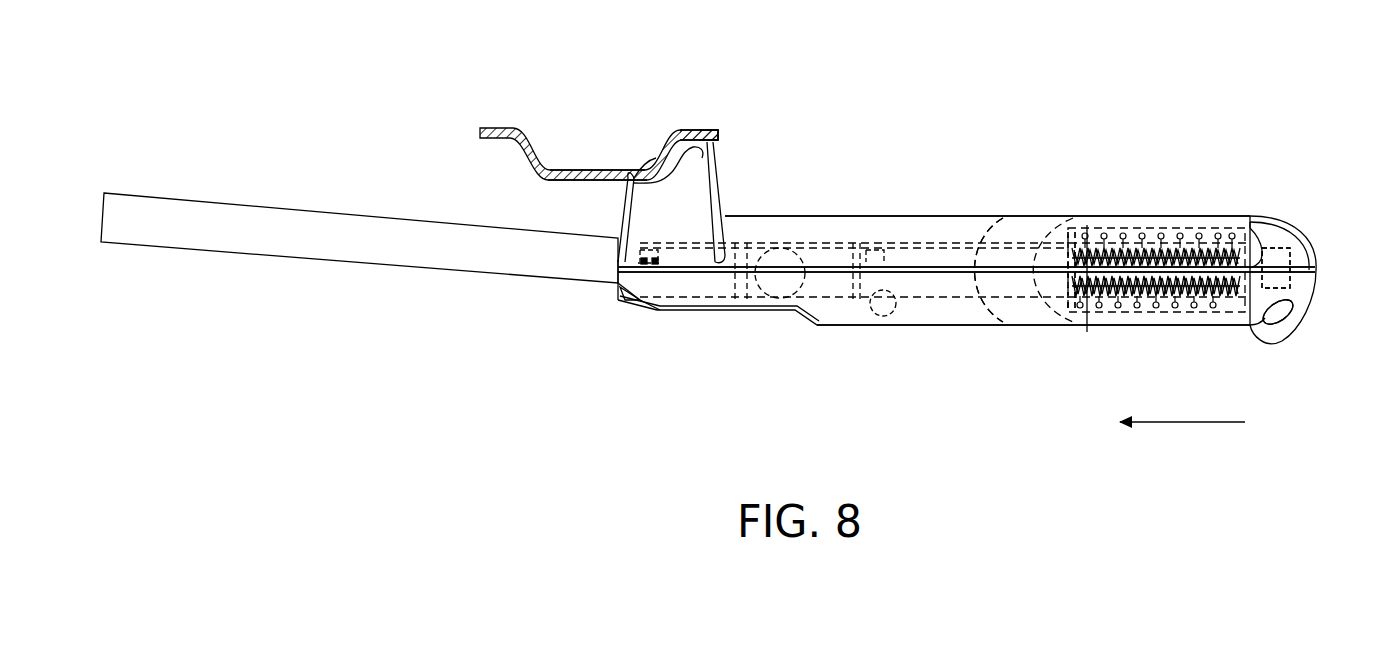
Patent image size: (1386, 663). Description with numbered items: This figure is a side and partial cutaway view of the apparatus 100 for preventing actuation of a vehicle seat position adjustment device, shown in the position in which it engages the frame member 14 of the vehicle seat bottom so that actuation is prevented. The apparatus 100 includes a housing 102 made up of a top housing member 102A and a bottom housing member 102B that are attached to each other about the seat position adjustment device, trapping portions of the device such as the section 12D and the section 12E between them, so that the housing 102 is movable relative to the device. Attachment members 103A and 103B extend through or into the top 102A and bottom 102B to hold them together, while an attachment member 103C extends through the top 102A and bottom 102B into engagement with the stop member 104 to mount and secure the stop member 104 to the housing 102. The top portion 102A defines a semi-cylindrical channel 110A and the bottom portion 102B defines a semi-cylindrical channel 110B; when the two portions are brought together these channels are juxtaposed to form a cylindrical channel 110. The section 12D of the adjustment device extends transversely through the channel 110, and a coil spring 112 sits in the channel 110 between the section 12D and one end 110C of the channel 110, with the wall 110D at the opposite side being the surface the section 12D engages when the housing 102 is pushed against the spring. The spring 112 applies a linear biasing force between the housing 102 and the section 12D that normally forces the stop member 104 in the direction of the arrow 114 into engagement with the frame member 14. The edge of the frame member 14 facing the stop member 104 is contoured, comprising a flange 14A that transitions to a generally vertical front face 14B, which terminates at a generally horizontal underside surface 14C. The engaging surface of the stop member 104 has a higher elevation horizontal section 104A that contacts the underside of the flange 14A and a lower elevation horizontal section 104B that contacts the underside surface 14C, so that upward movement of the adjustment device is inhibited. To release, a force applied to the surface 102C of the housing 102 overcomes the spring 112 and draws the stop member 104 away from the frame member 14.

The apparatus for preventing actuation of the vehicle seat position adjustment assem 100 is at (1137, 68).
The housing 102 is at (1316, 262).
The top housing member 102A is at (975, 216).
The bottom housing member 102B is at (1003, 326).
The surface of the housing 102C is at (975, 265).
The attachment member 103A is at (1283, 290).
The attachment member 103B is at (868, 292).
The attachment member 103C is at (640, 280).
The stop member 104 is at (720, 188).
The higher elevation horizontal section 104A is at (697, 133).
The lower elevation horizontal section 104B is at (622, 182).
The cylindrical channel 110 is at (1170, 231).
The semi-cylindrical channel 110A is at (1133, 228).
The semi-cylindrical channel 110B is at (1160, 305).
The end of the channel 110C is at (1088, 332).
The wall of the channel 110D is at (1250, 237).
The coil spring 112 is at (1075, 232).
The arrow 114 is at (1200, 423).
The section of the seat position adjustment device 12D is at (1238, 251).
The section of the seat position adjustment device 12E is at (958, 298).
The frame member 14 is at (565, 160).
The flange 14A is at (718, 132).
The generally vertical section or front face 14B is at (684, 163).
The generally horizontal underside surface 14C is at (567, 183).